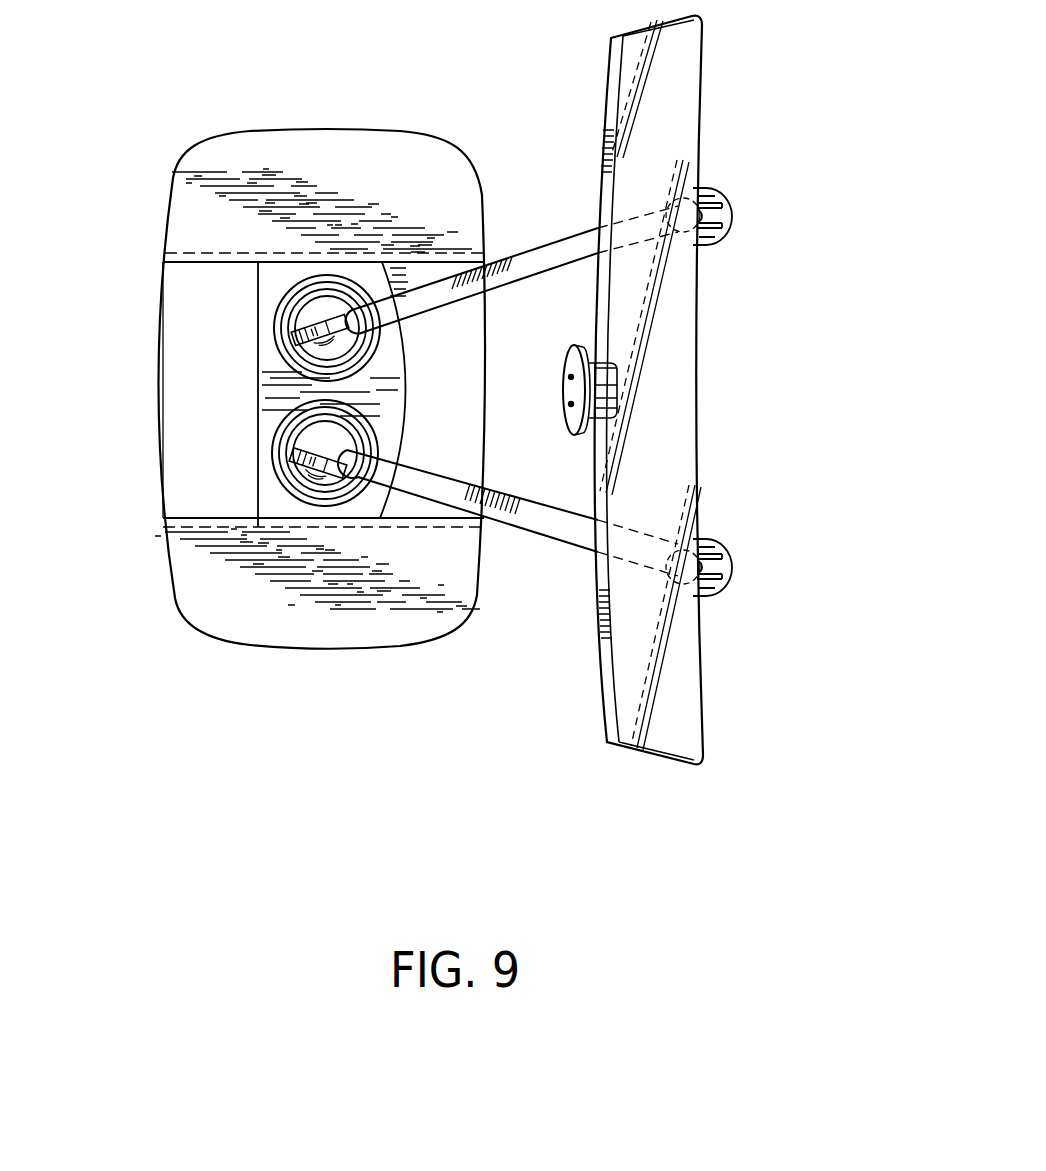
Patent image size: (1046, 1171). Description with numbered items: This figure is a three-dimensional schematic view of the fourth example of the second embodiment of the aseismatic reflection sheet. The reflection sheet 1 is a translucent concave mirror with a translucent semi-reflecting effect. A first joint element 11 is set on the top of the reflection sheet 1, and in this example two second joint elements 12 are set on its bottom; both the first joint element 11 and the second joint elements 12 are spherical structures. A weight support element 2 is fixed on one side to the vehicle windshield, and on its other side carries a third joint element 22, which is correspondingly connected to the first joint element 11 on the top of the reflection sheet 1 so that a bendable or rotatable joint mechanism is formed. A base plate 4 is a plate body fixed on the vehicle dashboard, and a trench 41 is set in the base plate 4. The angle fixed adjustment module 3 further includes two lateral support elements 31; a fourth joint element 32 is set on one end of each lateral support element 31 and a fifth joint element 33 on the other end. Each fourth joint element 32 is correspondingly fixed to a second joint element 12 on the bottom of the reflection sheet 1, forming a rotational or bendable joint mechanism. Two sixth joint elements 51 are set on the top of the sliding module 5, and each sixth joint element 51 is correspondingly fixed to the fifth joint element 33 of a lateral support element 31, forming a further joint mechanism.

The reflection sheet 1 is at (697, 117).
The first joint element 11 is at (617, 388).
The second joint element 12 is at (732, 220).
The weight support element 2 is at (641, 357).
The third joint element 22 is at (580, 347).
The angle fixed adjustment module 3 is at (522, 538).
The lateral support element 31 is at (447, 488).
The fourth joint element 32 is at (718, 246).
The fifth joint element 33 is at (280, 440).
The base plate 4 is at (203, 562).
The trench 41 is at (187, 325).
The sliding module 5 is at (280, 292).
The sixth joint element 51 is at (277, 489).